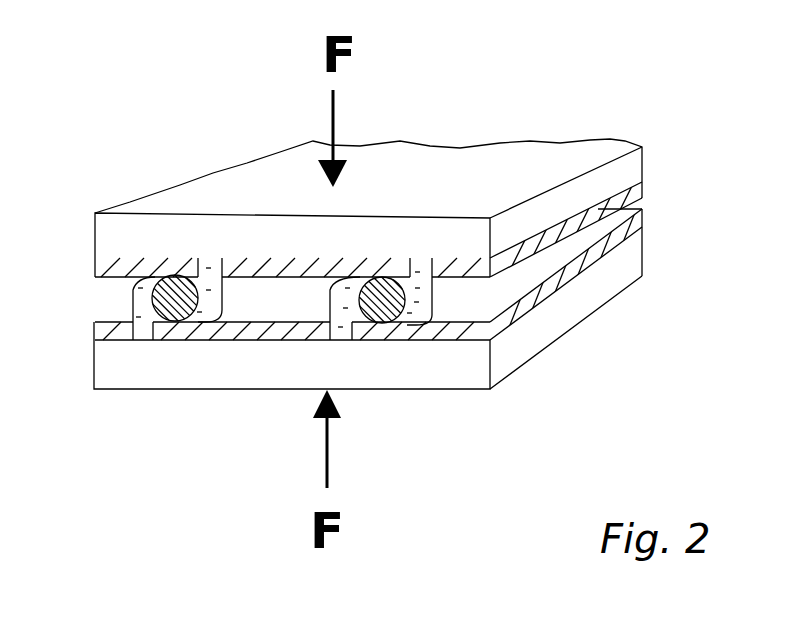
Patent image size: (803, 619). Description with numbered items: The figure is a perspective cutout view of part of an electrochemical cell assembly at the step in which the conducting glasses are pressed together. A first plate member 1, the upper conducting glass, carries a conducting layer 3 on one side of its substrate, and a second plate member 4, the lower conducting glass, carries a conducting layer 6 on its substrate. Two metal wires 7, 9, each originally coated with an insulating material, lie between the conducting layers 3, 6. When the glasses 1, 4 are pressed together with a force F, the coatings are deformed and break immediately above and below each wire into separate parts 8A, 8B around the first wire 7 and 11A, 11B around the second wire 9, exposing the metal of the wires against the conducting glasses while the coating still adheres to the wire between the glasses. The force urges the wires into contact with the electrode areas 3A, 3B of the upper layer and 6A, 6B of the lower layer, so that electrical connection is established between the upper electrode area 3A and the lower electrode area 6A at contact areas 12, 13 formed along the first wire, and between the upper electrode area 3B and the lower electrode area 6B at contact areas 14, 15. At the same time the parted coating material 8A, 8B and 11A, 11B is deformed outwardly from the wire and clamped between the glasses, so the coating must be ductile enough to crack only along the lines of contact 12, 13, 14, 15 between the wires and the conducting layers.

The first plate member 1 is at (654, 185).
The conducting layer 3 is at (360, 230).
The upper electrode area 3A is at (190, 270).
The upper electrode area 3B is at (320, 270).
The second plate member 4 is at (654, 268).
The conducting layer 6 is at (361, 296).
The lower electrode area 6A is at (288, 335).
The lower electrode area 6B is at (473, 338).
The metal wire 7 is at (168, 318).
The coating part 8A is at (133, 286).
The coating part 8B is at (213, 305).
The metal wire 9 is at (403, 328).
The coating part 11A is at (343, 300).
The coating part 11B is at (420, 315).
The contact area 12 is at (175, 300).
The contact area 13 is at (177, 328).
The contact area 14 is at (387, 303).
The contact area 15 is at (380, 328).